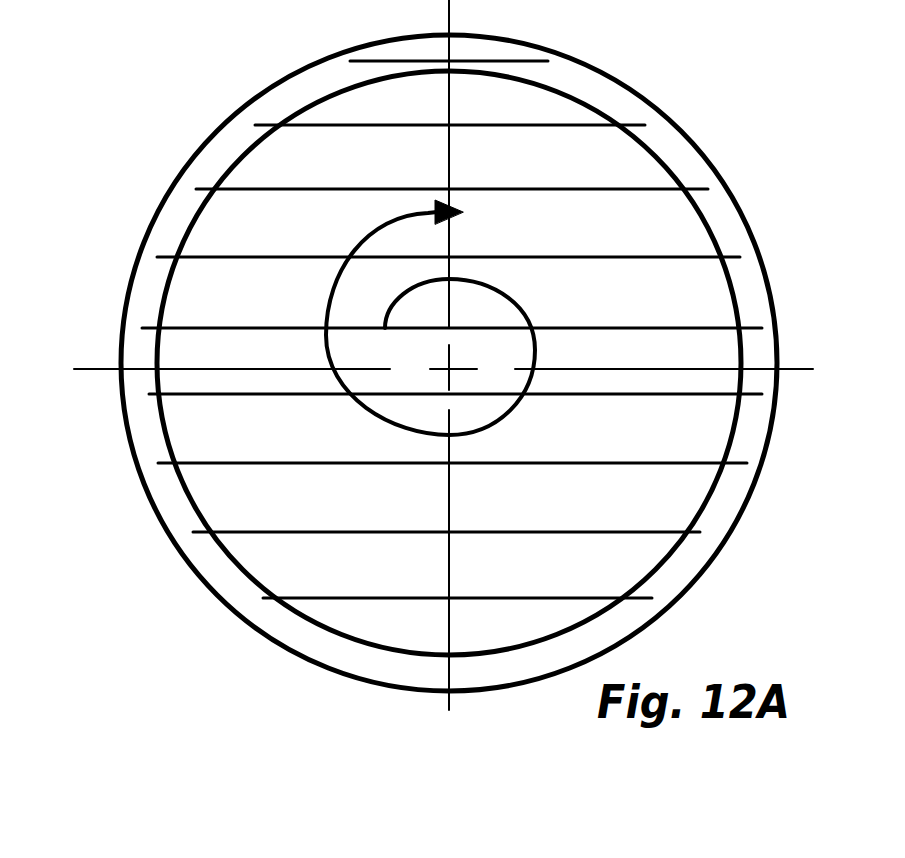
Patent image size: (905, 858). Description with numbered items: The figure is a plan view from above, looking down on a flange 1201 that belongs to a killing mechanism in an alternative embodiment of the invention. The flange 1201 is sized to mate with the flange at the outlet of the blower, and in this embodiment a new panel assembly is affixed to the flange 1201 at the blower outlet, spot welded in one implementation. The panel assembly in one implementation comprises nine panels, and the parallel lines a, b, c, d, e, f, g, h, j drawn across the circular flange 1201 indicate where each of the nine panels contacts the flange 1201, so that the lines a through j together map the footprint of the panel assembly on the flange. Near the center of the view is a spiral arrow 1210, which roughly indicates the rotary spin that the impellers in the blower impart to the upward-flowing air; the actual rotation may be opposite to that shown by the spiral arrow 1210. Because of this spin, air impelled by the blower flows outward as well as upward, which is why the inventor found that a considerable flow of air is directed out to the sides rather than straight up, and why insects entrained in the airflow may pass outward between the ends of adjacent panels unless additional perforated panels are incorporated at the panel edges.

The flange 1201 is at (598, 85).
The spiral arrow 1210 is at (468, 278).
The line a is at (404, 58).
The line b is at (313, 120).
The line c is at (248, 187).
The line d is at (200, 257).
The line e is at (180, 327).
The line f is at (168, 393).
The line g is at (195, 463).
The line h is at (248, 532).
The line j is at (310, 598).